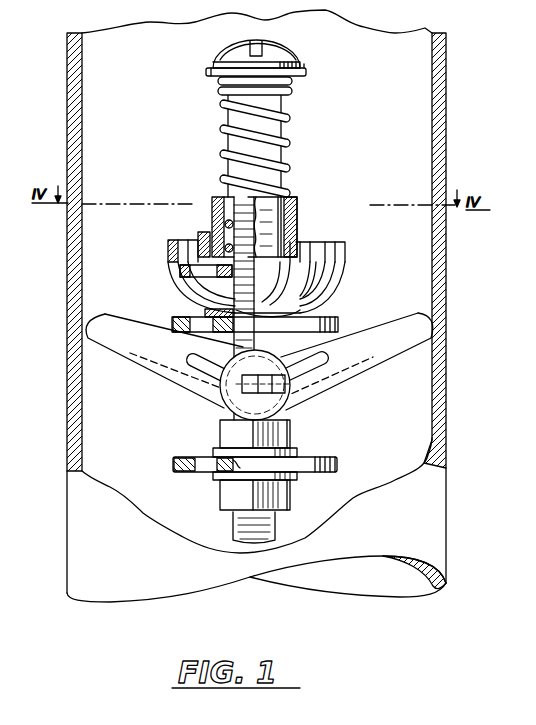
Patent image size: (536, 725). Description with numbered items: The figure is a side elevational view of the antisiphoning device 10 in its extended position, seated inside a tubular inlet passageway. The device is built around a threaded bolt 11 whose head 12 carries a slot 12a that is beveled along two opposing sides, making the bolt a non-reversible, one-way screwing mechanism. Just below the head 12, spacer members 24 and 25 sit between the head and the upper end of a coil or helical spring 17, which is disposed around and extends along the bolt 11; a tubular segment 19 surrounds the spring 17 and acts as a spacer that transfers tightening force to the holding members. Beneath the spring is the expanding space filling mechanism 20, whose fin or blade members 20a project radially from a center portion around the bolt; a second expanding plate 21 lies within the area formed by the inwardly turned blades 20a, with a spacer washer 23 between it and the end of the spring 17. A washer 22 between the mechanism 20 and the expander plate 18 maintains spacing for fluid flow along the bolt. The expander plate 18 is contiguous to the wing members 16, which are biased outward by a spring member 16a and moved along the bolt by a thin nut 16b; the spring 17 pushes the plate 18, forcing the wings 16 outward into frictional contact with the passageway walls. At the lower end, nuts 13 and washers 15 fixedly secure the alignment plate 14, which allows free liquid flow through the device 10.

The antisiphoning device 10 is at (352, 171).
The bolt 11 is at (266, 150).
The head 12 is at (300, 55).
The slot 12a is at (258, 52).
The nuts 13 is at (291, 427).
The alignment plate 14 is at (339, 465).
The washers 15 is at (298, 450).
The wing members 16 is at (155, 343).
The spring member 16a is at (340, 368).
The thin nut 16b is at (292, 386).
The coil or helical spring 17 is at (284, 120).
The expander plate 18 is at (338, 318).
The tubular segment 19 is at (297, 198).
The expanding space filling mechanism 20 is at (339, 239).
The fin or blade members 20a is at (346, 256).
The second expanding plate 21 is at (178, 266).
The washer 22 is at (331, 310).
The spacer washer 23 is at (212, 242).
The spacer member 24 is at (304, 75).
The spacer member 25 is at (302, 66).